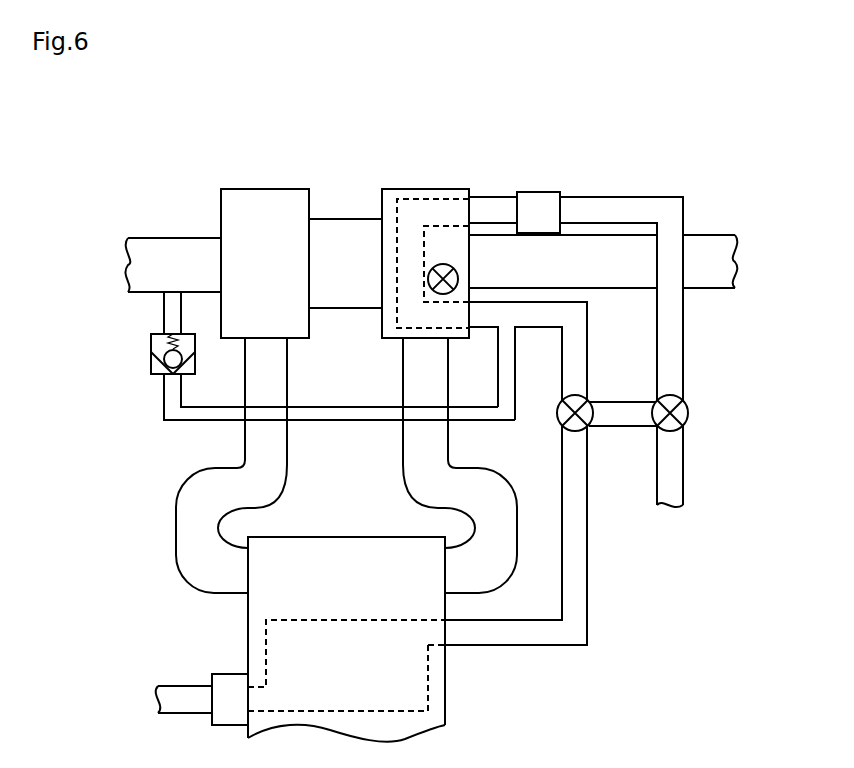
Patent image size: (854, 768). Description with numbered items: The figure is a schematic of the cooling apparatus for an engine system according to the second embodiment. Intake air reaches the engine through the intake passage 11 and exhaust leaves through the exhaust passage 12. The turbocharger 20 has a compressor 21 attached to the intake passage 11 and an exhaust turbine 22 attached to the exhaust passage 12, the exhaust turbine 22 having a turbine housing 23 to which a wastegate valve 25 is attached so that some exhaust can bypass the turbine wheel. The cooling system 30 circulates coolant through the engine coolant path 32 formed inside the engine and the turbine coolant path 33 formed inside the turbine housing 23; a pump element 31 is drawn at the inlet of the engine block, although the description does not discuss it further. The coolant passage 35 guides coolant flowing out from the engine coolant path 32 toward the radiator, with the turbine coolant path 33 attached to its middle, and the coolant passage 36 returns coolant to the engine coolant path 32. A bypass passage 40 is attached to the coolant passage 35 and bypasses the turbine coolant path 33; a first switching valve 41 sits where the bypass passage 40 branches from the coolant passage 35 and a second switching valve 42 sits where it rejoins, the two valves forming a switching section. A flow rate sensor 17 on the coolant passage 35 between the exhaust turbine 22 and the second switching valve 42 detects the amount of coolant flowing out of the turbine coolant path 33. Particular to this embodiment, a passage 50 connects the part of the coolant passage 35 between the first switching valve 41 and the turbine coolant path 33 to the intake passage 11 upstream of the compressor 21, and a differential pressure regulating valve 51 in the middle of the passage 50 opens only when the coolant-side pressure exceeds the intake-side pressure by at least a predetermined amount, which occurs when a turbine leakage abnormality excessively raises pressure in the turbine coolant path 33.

The intake passage 11 is at (181, 240).
The exhaust passage 12 is at (707, 236).
The flow rate sensor 17 is at (538, 192).
The turbocharger 20 is at (340, 147).
The compressor 21 is at (253, 189).
The exhaust turbine 22 is at (434, 236).
The turbine housing 23 is at (430, 189).
The wastegate valve 25 is at (459, 279).
The cooling system 30 is at (596, 367).
The pump 31 is at (236, 674).
The engine coolant path 32 is at (346, 620).
The turbine coolant path 33 is at (397, 248).
The coolant passage 35 is at (494, 197).
The coolant passage 36 is at (183, 686).
The bypass passage 40 is at (620, 402).
The first switching valve 41 is at (562, 423).
The second switching valve 42 is at (689, 410).
The passage 50 is at (164, 316).
The differential pressure regulating valve 51 is at (151, 365).